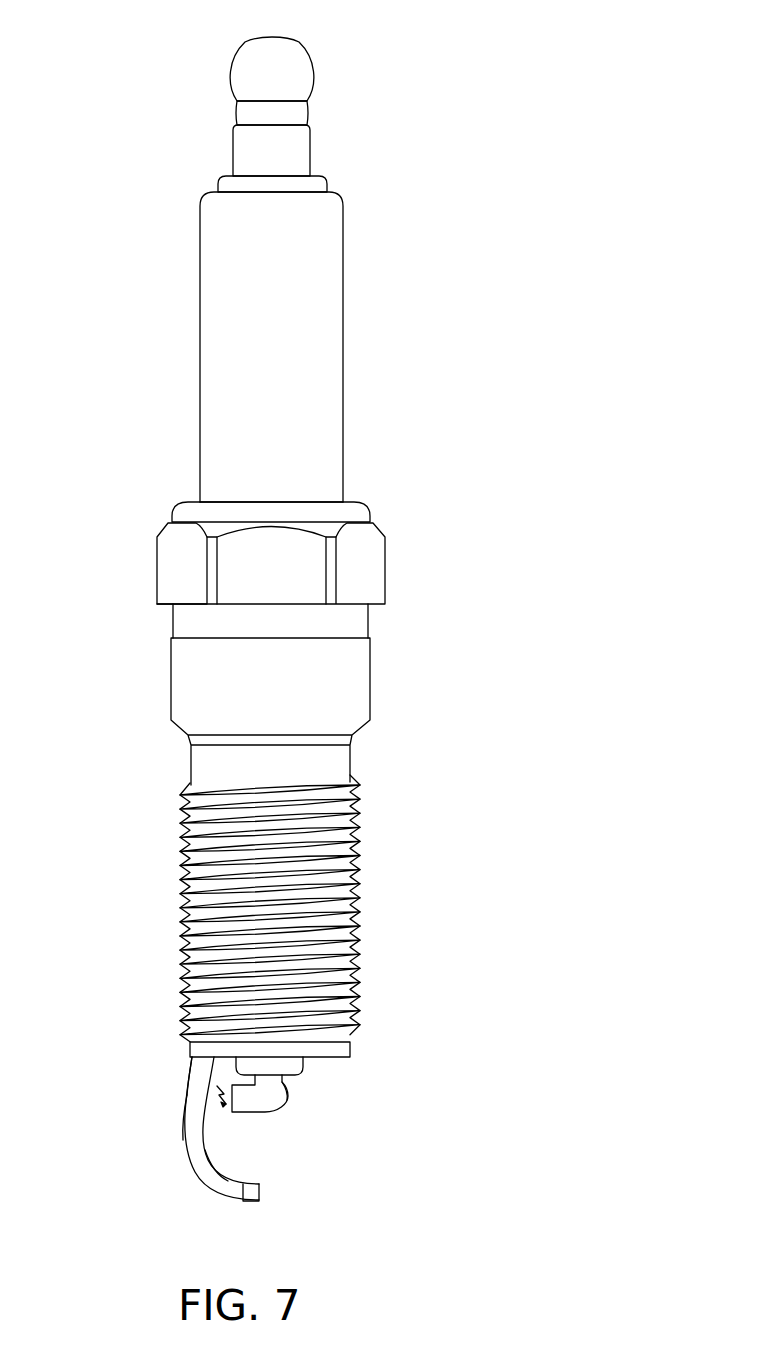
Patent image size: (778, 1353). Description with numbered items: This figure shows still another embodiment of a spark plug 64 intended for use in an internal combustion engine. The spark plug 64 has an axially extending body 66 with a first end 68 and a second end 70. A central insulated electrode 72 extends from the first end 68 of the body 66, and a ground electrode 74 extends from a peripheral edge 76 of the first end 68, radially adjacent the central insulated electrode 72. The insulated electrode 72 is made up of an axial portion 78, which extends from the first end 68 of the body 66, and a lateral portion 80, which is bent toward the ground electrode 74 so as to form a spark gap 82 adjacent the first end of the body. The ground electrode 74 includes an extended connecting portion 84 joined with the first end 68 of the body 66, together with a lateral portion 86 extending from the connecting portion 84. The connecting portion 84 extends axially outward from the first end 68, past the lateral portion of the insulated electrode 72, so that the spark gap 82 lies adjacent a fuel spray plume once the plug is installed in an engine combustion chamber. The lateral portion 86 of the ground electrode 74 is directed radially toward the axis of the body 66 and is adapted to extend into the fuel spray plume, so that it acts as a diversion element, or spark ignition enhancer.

The spark plug 64 is at (373, 502).
The body 66 is at (370, 677).
The first end 68 is at (203, 1050).
The second end 70 is at (270, 38).
The central insulated electrode 72 is at (270, 1100).
The ground electrode 74 is at (212, 1182).
The peripheral edge 76 is at (190, 1058).
The axial portion 78 is at (283, 1080).
The lateral portion 80 is at (210, 1182).
The spark gap 82 is at (222, 1095).
The connecting portion 84 is at (195, 1112).
The lateral portion 86 is at (245, 1201).